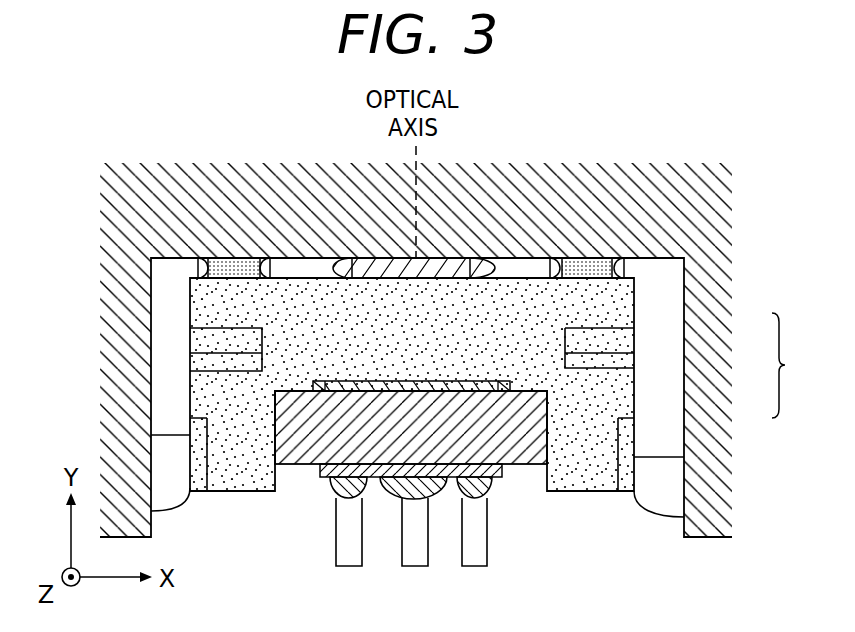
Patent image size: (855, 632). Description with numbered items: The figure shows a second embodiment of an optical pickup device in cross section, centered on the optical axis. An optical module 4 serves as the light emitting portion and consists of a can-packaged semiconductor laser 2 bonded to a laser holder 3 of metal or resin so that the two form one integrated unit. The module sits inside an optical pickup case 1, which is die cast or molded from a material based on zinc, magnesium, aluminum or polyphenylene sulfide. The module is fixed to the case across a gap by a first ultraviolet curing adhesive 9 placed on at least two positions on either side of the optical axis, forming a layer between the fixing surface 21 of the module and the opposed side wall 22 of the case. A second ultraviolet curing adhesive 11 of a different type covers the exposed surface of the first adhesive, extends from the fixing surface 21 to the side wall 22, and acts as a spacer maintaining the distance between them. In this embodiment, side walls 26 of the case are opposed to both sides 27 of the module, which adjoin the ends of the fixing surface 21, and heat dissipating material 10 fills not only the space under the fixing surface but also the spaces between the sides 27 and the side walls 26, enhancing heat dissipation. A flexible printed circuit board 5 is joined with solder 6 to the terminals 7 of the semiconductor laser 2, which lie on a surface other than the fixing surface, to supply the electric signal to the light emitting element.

The optical pickup case 1 is at (230, 183).
The semiconductor laser 2 is at (493, 435).
The laser holder 3 is at (633, 375).
The optical module 4 is at (787, 365).
The flexible printed circuit board 5 is at (482, 472).
The solder 6 is at (333, 488).
The terminals 7 is at (473, 538).
The first ultraviolet curing adhesive 9 is at (598, 262).
The heat dissipating material 10 is at (165, 283).
The second ultraviolet curing adhesive 11 is at (553, 262).
The fixing surface 21 is at (290, 258).
The side wall 22 is at (318, 262).
The side walls 26 is at (151, 518).
The both sides 27 is at (635, 309).